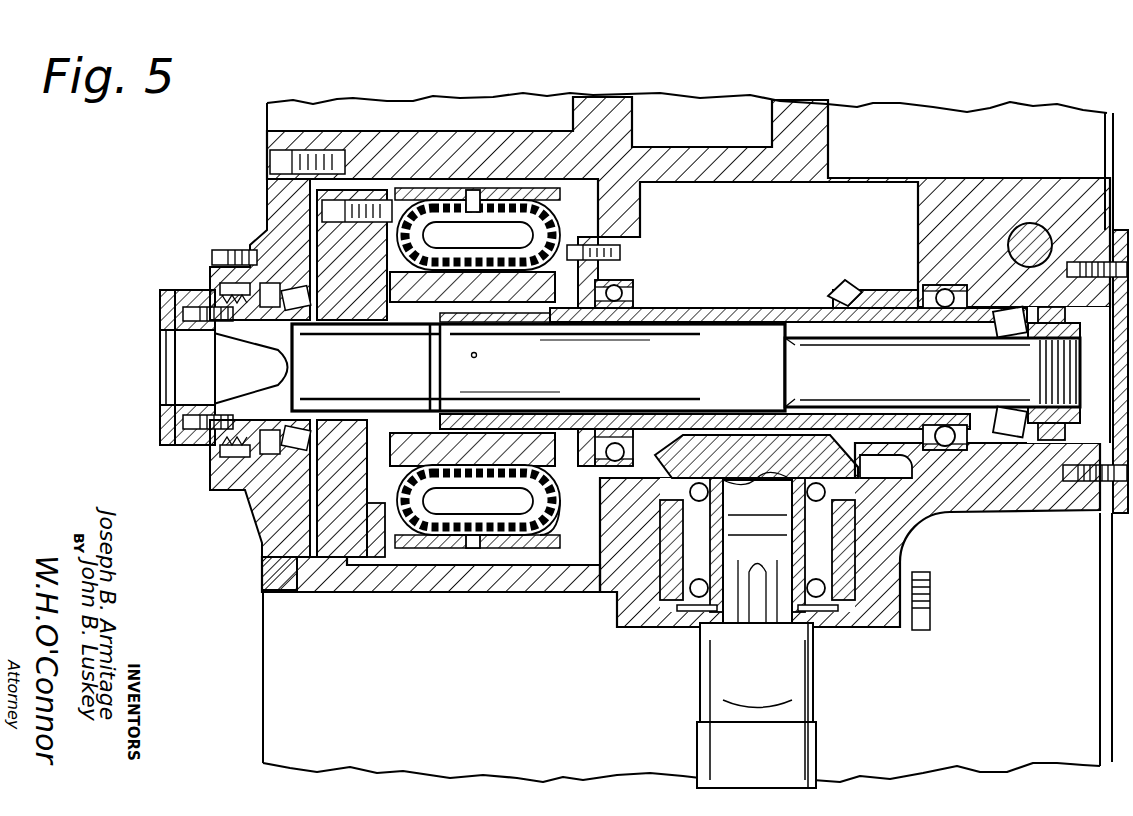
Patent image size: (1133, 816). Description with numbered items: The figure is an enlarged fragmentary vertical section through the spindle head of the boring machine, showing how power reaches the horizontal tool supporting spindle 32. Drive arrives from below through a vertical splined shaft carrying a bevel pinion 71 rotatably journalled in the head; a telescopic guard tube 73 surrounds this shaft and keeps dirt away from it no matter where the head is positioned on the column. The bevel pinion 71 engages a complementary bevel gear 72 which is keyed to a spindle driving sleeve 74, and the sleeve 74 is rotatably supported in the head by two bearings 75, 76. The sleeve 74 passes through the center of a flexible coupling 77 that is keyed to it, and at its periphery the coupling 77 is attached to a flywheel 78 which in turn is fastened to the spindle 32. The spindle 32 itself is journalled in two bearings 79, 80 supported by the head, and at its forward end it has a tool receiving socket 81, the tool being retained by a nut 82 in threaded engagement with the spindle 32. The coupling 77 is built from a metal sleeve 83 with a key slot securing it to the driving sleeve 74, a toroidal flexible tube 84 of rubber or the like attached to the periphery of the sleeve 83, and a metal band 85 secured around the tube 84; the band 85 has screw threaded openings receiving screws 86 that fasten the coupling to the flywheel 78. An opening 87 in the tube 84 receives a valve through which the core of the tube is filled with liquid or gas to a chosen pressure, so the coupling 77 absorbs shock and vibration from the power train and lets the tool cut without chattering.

The tool supporting spindle 32 is at (212, 446).
The bevel pinion 71 is at (718, 448).
The bevel gear 72 is at (855, 292).
The telescopic guard tube 73 is at (805, 690).
The spindle driving sleeve 74 is at (752, 305).
The bearing 75 is at (945, 428).
The bearing 76 is at (637, 283).
The flexible coupling 77 is at (570, 217).
The flywheel 78 is at (320, 195).
The bearing 79 is at (300, 458).
The bearing 80 is at (1020, 338).
The tool receiving socket 81 is at (205, 367).
The nut 82 is at (165, 302).
The metal sleeve 83 is at (466, 478).
The toroidal flexible tube 84 is at (548, 515).
The metal band 85 is at (505, 548).
The screws 86 is at (436, 190).
The opening 87 is at (475, 202).